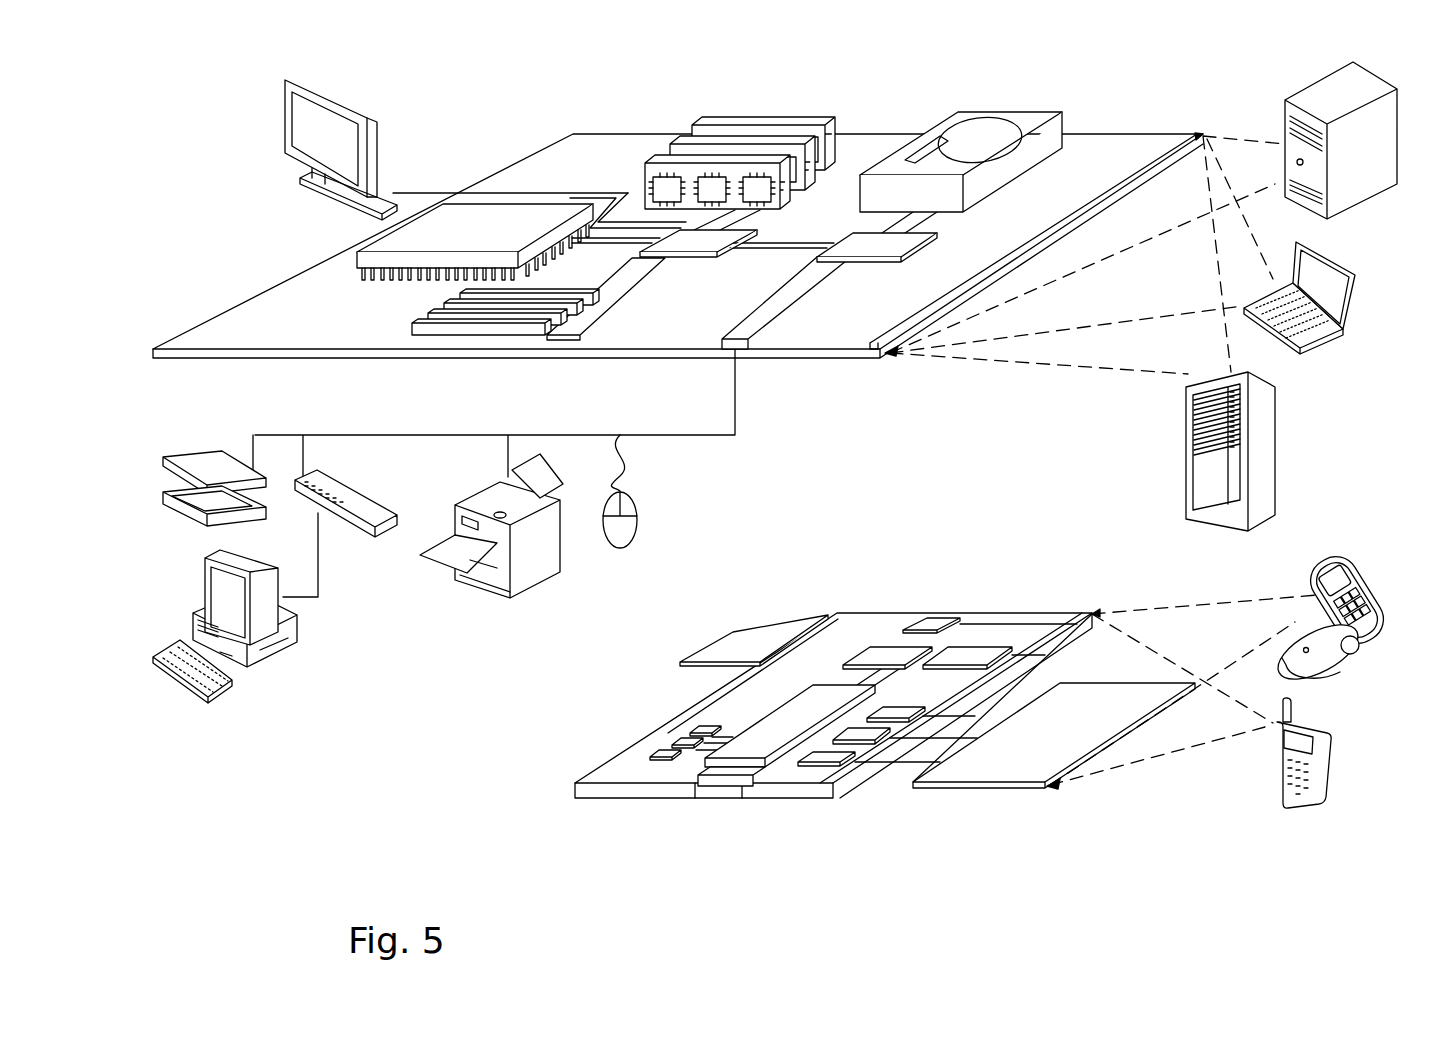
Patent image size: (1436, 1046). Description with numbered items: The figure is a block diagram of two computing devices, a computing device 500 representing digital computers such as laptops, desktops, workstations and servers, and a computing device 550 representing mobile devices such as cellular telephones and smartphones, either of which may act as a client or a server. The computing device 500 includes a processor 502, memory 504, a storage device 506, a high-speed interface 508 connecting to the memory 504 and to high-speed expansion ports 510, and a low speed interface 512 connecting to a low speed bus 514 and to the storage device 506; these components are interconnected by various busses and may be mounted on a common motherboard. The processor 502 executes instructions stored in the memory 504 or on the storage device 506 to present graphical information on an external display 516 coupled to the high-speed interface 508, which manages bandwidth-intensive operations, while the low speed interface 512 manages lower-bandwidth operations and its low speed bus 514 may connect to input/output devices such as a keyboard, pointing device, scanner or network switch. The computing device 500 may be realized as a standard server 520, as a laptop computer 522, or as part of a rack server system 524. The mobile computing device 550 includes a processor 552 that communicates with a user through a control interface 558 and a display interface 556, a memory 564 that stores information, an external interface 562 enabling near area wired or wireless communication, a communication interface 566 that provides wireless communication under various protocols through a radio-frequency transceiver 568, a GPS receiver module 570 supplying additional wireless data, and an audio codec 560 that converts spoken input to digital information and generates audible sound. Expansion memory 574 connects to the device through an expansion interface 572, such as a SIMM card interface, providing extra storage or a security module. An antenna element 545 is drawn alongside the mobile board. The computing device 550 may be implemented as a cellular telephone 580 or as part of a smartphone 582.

The computing device 500 is at (493, 107).
The processor 502 is at (356, 258).
The memory 504 is at (712, 124).
The storage device 506 is at (948, 110).
The high-speed interface 508 is at (673, 238).
The high-speed expansion ports 510 is at (430, 313).
The low speed interface 512 is at (856, 243).
The low speed bus 514 is at (749, 352).
The display 516 is at (287, 79).
The standard server 520 is at (1285, 110).
The laptop computer 522 is at (1362, 268).
The rack server system 524 is at (1186, 477).
The antenna 545 is at (1010, 770).
The computing device 550 is at (549, 795).
The processor 552 is at (760, 751).
The display interface 556 is at (834, 758).
The control interface 558 is at (867, 737).
The audio codec 560 is at (893, 716).
The external interface 562 is at (723, 788).
The memory 564 is at (672, 741).
The communication interface 566 is at (885, 656).
The transceiver 568 is at (968, 654).
The GPS receiver module 570 is at (940, 618).
The expansion interface 572 is at (810, 630).
The expansion memory 574 is at (727, 628).
The cellular telephone 580 is at (1338, 570).
The smartphone 582 is at (1273, 755).